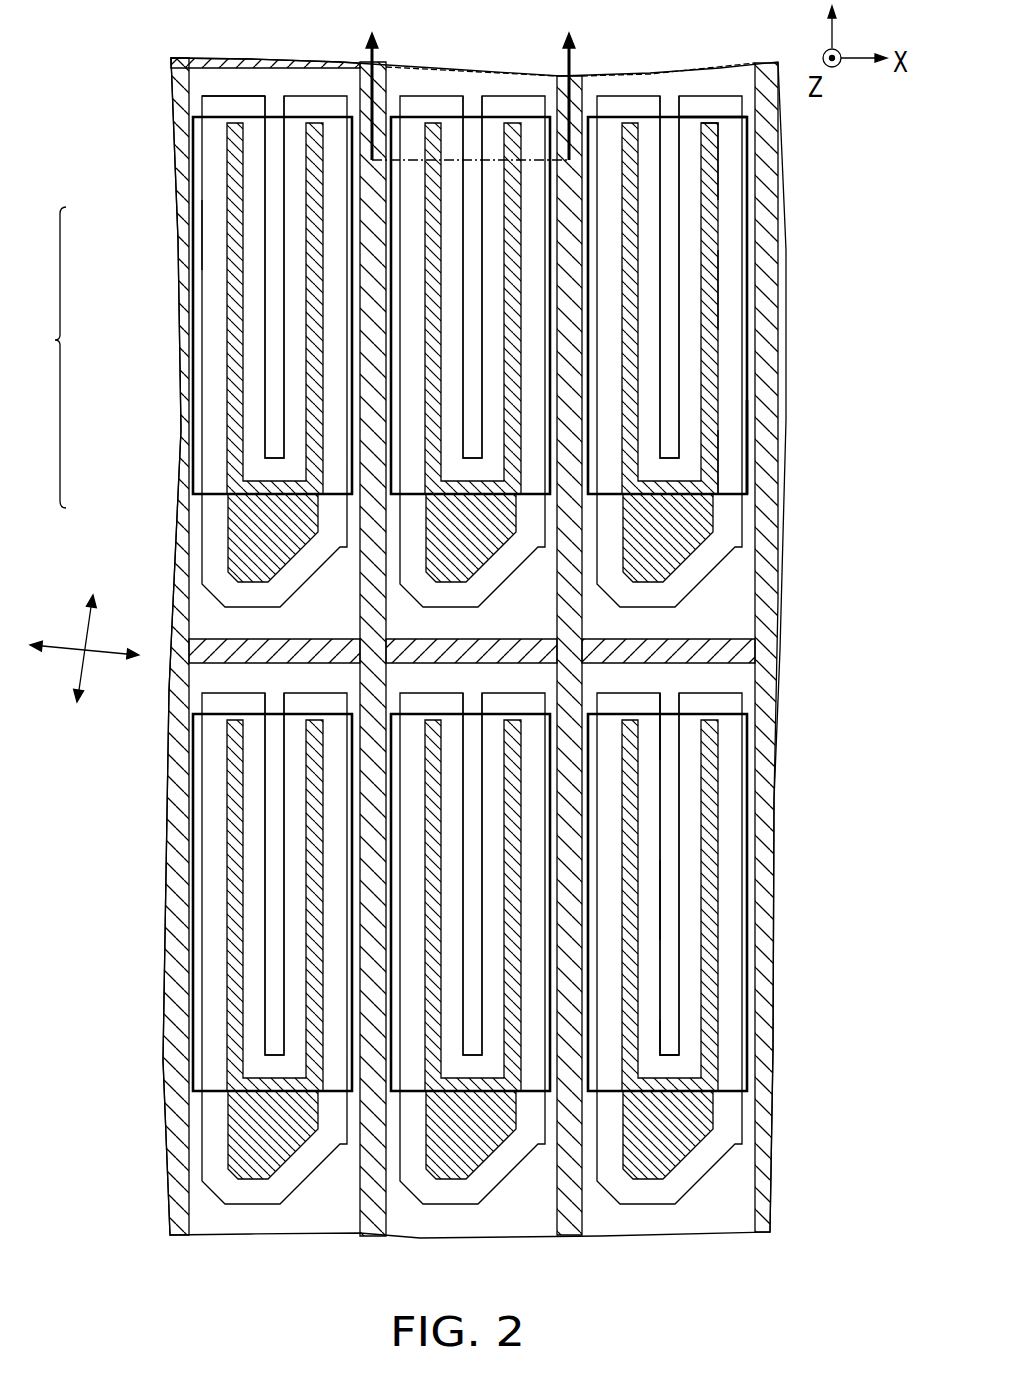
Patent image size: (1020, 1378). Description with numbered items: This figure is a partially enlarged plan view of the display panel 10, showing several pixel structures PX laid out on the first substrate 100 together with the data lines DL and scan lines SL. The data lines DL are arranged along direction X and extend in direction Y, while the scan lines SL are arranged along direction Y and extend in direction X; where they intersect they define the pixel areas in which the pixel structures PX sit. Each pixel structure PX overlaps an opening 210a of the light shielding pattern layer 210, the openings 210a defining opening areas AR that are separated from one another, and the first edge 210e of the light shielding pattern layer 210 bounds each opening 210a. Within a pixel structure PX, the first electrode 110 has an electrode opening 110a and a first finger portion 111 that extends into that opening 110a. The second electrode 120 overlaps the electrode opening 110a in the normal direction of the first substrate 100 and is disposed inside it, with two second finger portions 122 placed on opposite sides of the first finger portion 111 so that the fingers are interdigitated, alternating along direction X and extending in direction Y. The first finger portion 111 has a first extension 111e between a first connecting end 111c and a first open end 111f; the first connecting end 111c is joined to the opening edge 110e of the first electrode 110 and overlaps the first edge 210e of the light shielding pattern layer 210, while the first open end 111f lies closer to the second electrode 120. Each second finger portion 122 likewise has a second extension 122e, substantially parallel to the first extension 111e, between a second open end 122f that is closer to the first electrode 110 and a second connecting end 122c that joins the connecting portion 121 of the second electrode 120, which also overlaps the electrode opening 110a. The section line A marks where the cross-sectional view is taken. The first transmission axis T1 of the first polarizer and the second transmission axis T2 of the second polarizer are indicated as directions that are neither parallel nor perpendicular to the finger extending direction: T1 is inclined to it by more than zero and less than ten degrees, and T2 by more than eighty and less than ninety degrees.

The display panel 10 is at (864, 1248).
The first substrate 100 is at (259, 83).
The first electrode 110 is at (110, 153).
The electrode opening 110a is at (212, 235).
The opening edge 110e is at (221, 96).
The first finger portion 111 is at (272, 280).
The first connecting end 111c is at (667, 732).
The first extension 111e is at (670, 898).
The first open end 111f is at (670, 1037).
The second electrode 120 is at (110, 462).
The connecting portion 121 is at (248, 522).
The second finger portion 122 is at (305, 464).
The second open end 122f is at (708, 152).
The second extension 122e is at (715, 297).
The second connecting end 122c is at (712, 467).
The light shielding pattern layer 210 is at (543, 604).
The first edge 210e is at (725, 118).
The opening 210a is at (747, 496).
The data line DL is at (766, 688).
The scan line SL is at (748, 652).
The pixel structure PX is at (44, 357).
The opening area AR is at (647, 138).
The section line A-A' A is at (472, 82).
The first transmission axis T1 is at (82, 625).
The second transmission axis T2 is at (110, 653).